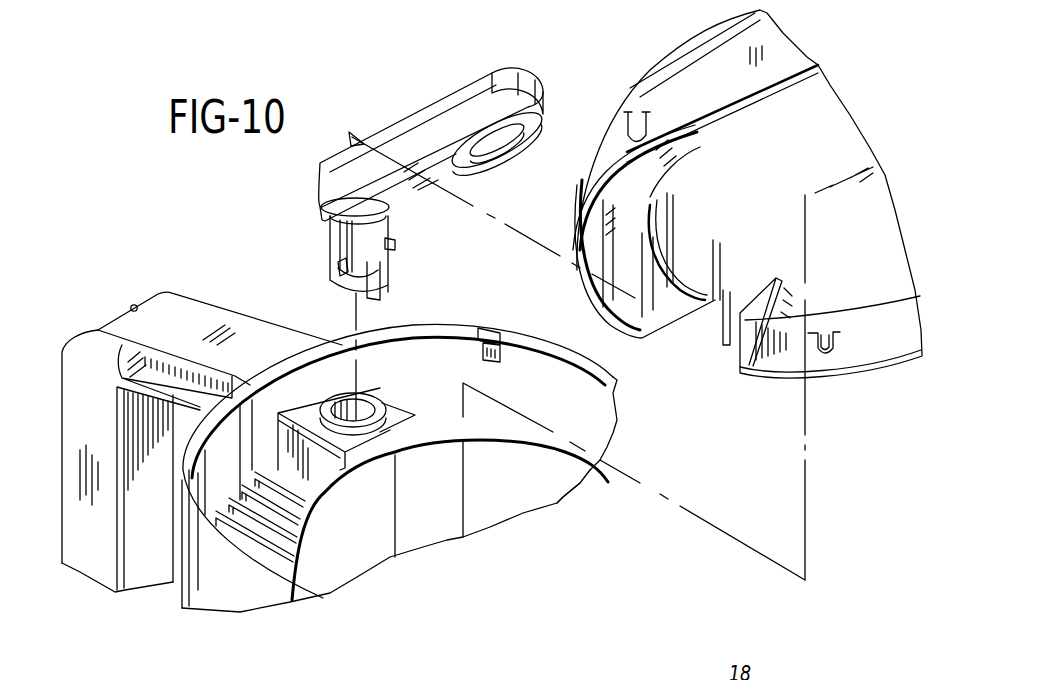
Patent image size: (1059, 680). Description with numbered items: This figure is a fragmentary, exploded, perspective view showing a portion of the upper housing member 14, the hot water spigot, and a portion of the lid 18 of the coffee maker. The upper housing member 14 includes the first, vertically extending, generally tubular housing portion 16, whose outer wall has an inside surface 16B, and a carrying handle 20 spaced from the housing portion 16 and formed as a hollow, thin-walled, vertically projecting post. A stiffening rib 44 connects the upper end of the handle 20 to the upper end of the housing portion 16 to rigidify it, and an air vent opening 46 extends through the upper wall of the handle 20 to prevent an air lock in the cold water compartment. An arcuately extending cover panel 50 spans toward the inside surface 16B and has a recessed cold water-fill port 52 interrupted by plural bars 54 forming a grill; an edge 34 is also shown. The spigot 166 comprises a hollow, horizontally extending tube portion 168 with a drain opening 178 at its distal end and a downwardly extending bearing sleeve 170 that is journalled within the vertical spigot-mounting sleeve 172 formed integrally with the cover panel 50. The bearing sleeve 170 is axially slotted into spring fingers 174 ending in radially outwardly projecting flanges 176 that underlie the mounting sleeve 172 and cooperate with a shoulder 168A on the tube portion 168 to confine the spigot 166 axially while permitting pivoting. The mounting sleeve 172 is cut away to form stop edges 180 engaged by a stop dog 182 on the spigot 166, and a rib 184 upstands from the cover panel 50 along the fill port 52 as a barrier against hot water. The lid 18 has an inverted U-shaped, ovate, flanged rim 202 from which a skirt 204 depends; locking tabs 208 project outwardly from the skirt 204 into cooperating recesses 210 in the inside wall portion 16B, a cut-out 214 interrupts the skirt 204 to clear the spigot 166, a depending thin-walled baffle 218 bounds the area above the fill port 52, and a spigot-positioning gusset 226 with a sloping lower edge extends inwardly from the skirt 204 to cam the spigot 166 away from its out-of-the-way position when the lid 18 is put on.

The upper housing member 14 is at (181, 615).
The first housing portion 16 is at (268, 598).
The inside surface of outer wall 16B is at (572, 374).
The lid 18 is at (850, 55).
The carrying handle 20 is at (75, 390).
The edge 34 is at (566, 482).
The stiffening rib 44 is at (213, 321).
The air vent opening 46 is at (133, 304).
The cover panel 50 is at (590, 447).
The cold water-fill port 52 is at (268, 444).
The bars 54 is at (260, 510).
The spigot 166 is at (416, 100).
The tube portion 168 is at (482, 82).
The shoulder 168A is at (328, 216).
The bearing sleeve 170 is at (390, 248).
The spigot-mounting sleeve 172 is at (367, 392).
The spring fingers 174 is at (337, 240).
The flanges 176 is at (330, 272).
The drain opening 178 is at (515, 152).
The stop edges 180 is at (413, 417).
The stop dog 182 is at (395, 212).
The rib 184 is at (330, 460).
The rim 202 is at (688, 45).
The skirt 204 is at (758, 78).
The locking tabs 208 is at (635, 101).
The recess 210 is at (497, 335).
The cut-out 214 is at (725, 335).
The baffle 218 is at (688, 190).
The spigot-positioning gusset 226 is at (755, 290).